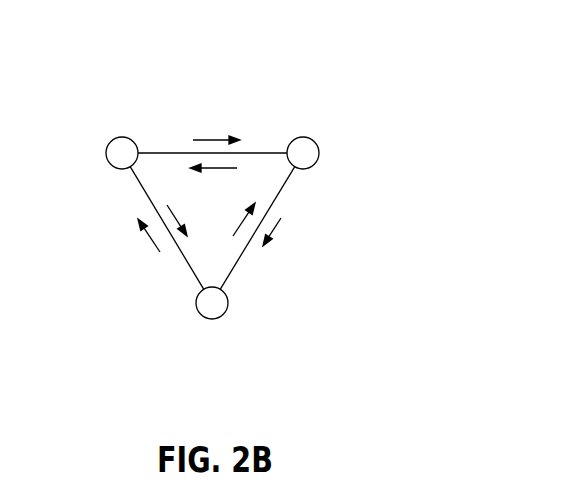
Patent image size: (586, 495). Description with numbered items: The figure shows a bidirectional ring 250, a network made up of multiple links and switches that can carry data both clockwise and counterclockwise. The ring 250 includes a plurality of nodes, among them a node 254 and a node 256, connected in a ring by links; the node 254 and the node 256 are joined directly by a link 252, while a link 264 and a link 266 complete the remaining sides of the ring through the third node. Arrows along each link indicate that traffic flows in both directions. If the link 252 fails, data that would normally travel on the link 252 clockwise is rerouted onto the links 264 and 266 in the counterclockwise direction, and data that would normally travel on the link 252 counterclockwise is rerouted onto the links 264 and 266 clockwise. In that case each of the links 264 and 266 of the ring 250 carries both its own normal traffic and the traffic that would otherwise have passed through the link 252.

The bidirectional ring 250 is at (420, 76).
The link 252 is at (139, 193).
The node 254 is at (206, 318).
The node 256 is at (122, 137).
The link 264 is at (271, 149).
The link 266 is at (279, 196).